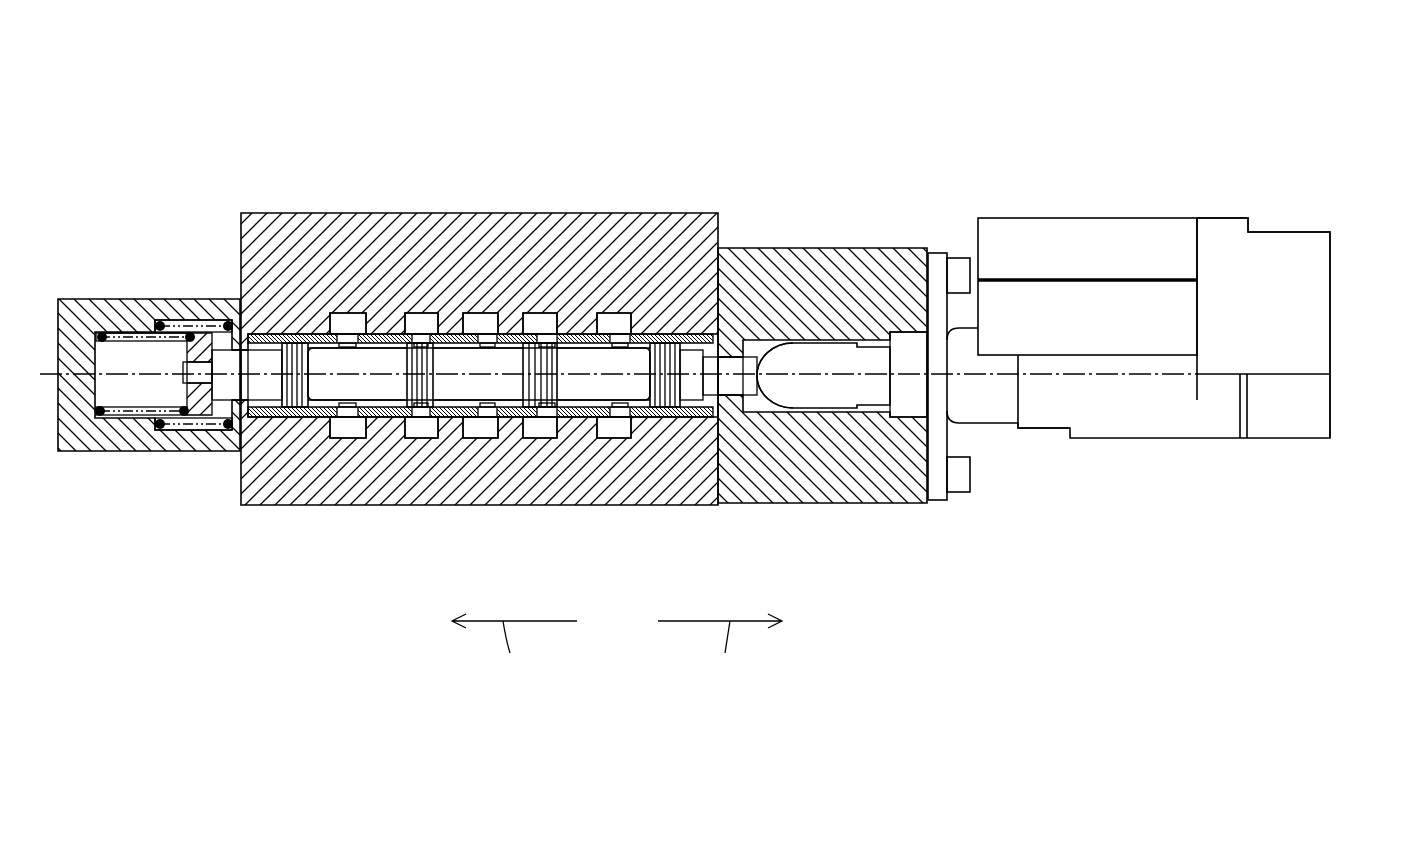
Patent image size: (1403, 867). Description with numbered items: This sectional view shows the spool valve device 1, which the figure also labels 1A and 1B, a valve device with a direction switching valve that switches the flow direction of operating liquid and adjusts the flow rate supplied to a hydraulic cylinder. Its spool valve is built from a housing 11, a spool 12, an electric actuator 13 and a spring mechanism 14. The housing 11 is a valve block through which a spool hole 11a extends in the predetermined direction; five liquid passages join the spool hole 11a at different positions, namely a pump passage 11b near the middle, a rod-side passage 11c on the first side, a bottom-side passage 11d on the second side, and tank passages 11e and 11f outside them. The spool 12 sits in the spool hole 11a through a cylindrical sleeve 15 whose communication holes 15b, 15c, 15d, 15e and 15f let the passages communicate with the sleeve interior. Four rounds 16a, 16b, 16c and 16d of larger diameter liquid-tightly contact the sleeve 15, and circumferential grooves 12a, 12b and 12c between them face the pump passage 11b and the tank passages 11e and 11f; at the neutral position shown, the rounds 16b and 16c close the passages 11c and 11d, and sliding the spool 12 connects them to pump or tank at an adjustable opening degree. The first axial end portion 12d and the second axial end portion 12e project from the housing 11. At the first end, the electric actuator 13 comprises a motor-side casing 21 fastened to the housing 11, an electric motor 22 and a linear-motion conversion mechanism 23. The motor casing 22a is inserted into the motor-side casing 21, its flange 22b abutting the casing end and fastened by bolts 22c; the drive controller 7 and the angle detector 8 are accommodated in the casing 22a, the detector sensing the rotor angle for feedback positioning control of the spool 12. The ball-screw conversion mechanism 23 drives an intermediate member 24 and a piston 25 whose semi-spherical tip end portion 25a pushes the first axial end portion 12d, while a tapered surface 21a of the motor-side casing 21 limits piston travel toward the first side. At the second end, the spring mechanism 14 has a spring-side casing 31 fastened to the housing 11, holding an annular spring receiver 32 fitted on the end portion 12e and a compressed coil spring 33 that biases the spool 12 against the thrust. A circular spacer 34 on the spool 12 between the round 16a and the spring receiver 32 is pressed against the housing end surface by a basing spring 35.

The spool valve device 1 is at (713, 425).
The valve device 1A is at (713, 425).
The valve device 1B is at (1263, 113).
The drive controller 7 is at (1108, 240).
The angle detector 8 is at (1320, 273).
The housing 11 is at (417, 213).
The spool hole 11a is at (252, 420).
The pump passage 11b is at (463, 334).
The rod-side passage 11c is at (407, 334).
The bottom-side passage 11d is at (538, 334).
The tank passage 11e is at (322, 334).
The tank passage 11f is at (628, 334).
The spool 12 is at (505, 400).
The circumferential groove 12a is at (512, 350).
The circumferential groove 12b is at (318, 350).
The circumferential groove 12c is at (583, 350).
The first axial end portion 12d is at (736, 357).
The second axial end portion 12e is at (184, 384).
The electric actuator 13 is at (1132, 466).
The spring mechanism 14 is at (172, 256).
The sleeve 15 is at (318, 420).
The communication hole 15b is at (480, 343).
The communication hole 15c is at (422, 343).
The communication hole 15d is at (542, 343).
The communication hole 15e is at (347, 343).
The communication hole 15f is at (613, 343).
The round 16a is at (290, 408).
The round 16b is at (423, 408).
The round 16c is at (542, 408).
The round 16d is at (668, 408).
The motor-side casing 21 is at (822, 375).
The tapered surface 21a is at (750, 407).
The electric motor 22 is at (1231, 440).
The casing 22a is at (1178, 440).
The flange 22b is at (937, 500).
The bolts 22c is at (960, 260).
The linear-motion conversion mechanism 23 is at (1019, 430).
The intermediate member 24 is at (880, 412).
The piston 25 is at (845, 343).
The tip end portion 25a is at (770, 355).
The spring-side casing 31 is at (95, 452).
The spring receiver 32 is at (196, 333).
The coil spring 33 is at (124, 333).
The spacer 34 is at (235, 452).
The basing spring 35 is at (200, 420).